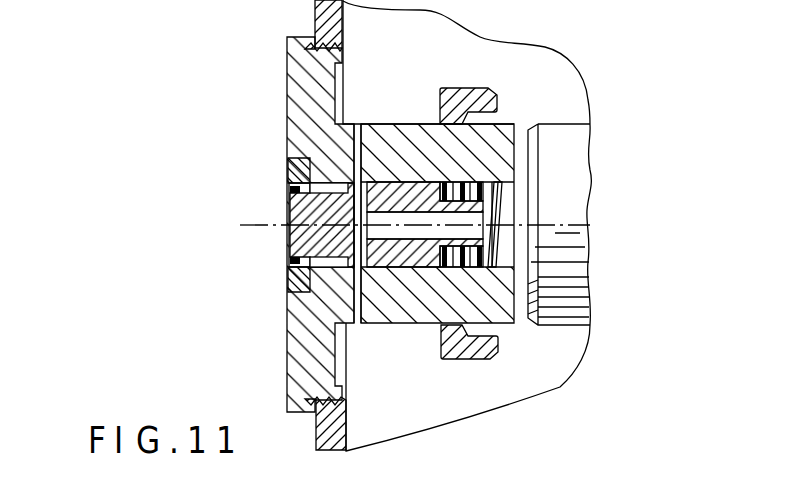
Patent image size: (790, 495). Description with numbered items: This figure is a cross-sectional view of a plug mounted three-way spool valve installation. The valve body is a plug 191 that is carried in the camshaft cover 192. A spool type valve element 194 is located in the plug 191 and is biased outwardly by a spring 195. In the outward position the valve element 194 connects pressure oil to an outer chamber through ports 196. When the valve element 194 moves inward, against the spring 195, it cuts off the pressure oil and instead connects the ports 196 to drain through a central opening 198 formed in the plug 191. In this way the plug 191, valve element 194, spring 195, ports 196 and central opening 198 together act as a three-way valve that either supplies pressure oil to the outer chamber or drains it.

The plug 191 is at (287, 325).
The camshaft cover 192 is at (340, 424).
The spool type valve element 194 is at (432, 183).
The spring 195 is at (498, 239).
The ports 196 is at (359, 148).
The central opening 198 is at (288, 206).